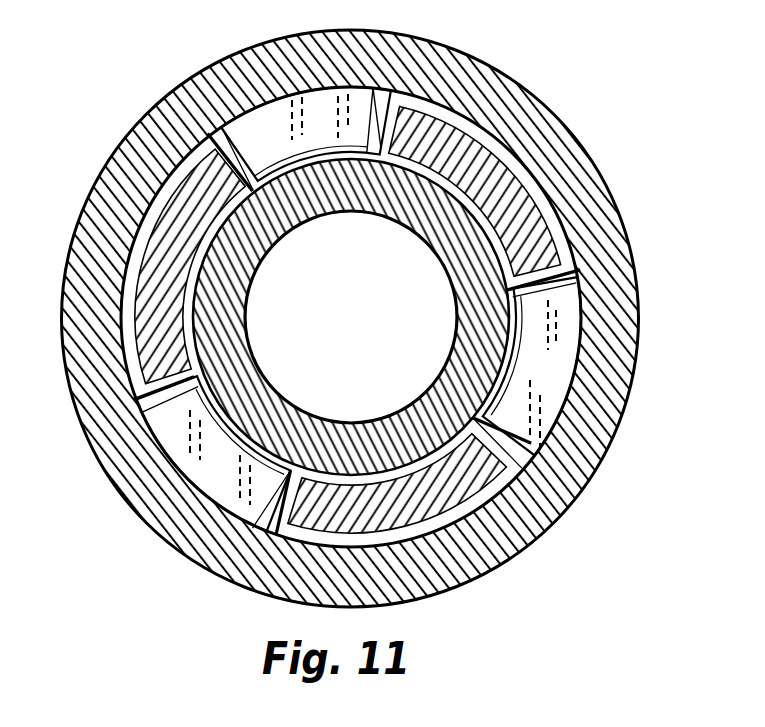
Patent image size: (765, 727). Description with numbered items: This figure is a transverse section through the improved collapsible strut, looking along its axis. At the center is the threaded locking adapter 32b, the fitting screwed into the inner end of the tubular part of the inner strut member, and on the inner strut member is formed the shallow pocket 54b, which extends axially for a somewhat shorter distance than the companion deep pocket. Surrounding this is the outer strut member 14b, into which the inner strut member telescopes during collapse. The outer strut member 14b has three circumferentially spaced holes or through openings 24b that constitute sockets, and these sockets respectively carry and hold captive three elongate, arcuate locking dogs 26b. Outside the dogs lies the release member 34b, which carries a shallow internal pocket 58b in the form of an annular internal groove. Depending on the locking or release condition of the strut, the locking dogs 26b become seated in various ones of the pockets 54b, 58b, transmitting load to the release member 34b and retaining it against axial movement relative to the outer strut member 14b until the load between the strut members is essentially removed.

The outer strut member 14b is at (173, 223).
The release member 34b is at (540, 150).
The through openings 24b is at (210, 162).
The locking dogs 26b is at (273, 123).
The shallow internal pocket 58b is at (550, 207).
The shallow pocket 54b is at (497, 246).
The locking adapter 32b is at (262, 410).